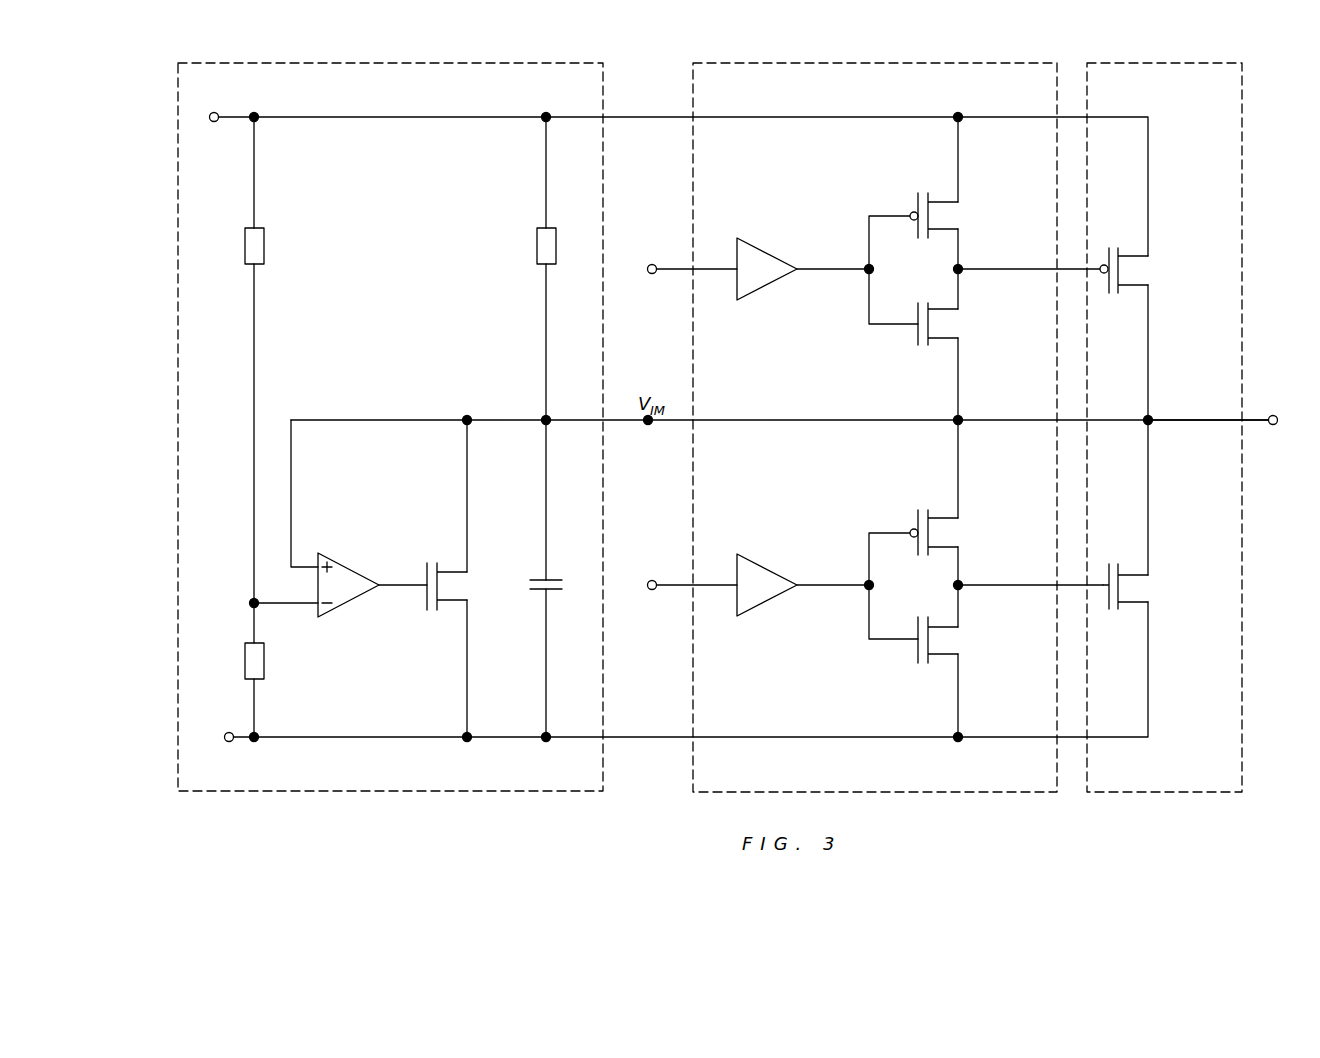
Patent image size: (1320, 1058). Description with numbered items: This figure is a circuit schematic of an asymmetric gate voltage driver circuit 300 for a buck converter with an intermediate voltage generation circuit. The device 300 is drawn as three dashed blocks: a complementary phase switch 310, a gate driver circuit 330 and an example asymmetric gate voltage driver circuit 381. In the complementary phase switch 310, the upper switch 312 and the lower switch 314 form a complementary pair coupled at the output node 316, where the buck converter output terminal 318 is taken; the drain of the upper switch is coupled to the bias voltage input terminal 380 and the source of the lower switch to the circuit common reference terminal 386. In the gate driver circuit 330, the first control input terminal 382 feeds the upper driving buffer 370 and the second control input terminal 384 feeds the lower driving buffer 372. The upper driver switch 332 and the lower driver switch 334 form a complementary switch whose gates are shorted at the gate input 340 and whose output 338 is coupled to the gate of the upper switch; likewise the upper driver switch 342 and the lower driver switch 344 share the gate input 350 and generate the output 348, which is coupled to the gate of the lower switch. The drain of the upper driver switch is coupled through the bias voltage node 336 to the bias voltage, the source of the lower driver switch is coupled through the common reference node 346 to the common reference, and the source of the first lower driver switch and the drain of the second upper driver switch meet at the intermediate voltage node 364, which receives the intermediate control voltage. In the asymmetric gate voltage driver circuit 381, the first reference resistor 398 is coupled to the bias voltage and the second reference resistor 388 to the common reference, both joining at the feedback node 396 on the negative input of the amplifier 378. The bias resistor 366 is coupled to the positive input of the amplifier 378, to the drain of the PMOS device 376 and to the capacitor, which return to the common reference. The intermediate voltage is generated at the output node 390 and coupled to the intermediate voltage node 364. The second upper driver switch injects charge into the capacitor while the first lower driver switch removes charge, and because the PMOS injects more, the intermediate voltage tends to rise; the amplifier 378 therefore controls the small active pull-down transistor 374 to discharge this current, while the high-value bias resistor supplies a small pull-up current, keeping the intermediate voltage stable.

The asymmetric gate voltage driver circuit 300 is at (1266, 849).
The complementary phase switch 310 is at (1195, 63).
The switch SW1 312 is at (1159, 270).
The switch SW2 314 is at (1159, 586).
The output node 316 is at (1146, 421).
The output terminal VLX 318 is at (1194, 417).
The gate driver circuit 330 is at (1003, 63).
The switch SW11 332 is at (975, 213).
The switch SW12 334 is at (976, 324).
The bias voltage node 336 is at (958, 112).
The output of complementary switch SW11/SW12 338 is at (962, 266).
The gate input of complementary switch SW11/SW12 340 is at (872, 271).
The switch SW21 342 is at (975, 530).
The switch SW22 344 is at (976, 641).
The common reference node 346 is at (958, 742).
The output of complementary switch SW21/SW22 348 is at (962, 582).
The gate input of complementary switch SW21/SW22 350 is at (872, 587).
The intermediate voltage node 364 is at (962, 421).
The bias resistor 366 is at (538, 267).
The upper driving buffer 370 is at (763, 285).
The lower driving buffer 372 is at (763, 601).
The switch SW3 374 is at (449, 562).
The PMOS device 376 is at (525, 589).
The amplifier 378 is at (349, 603).
The input voltage terminal VIN 380 is at (230, 105).
The asymmetric gate voltage driver circuit 381 is at (548, 63).
The control input terminal VC1 382 is at (679, 277).
The control input terminal VC2 384 is at (679, 593).
The common terminal VCOM 386 is at (257, 742).
The resistor R3 388 is at (263, 681).
The intermediate voltage output node 390 is at (545, 415).
The feedback node 396 is at (250, 603).
The resistor R2 398 is at (263, 267).